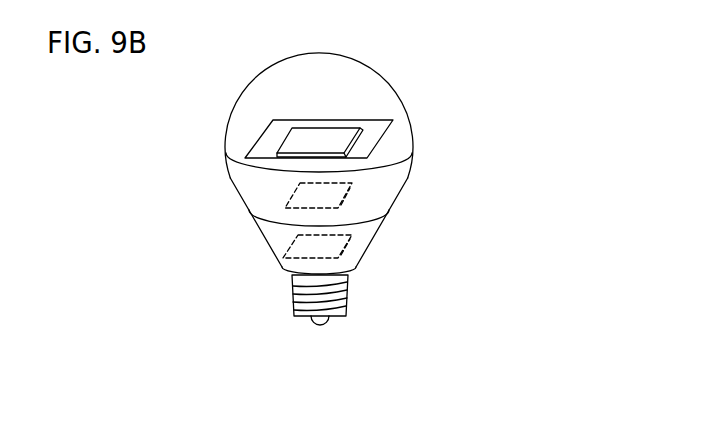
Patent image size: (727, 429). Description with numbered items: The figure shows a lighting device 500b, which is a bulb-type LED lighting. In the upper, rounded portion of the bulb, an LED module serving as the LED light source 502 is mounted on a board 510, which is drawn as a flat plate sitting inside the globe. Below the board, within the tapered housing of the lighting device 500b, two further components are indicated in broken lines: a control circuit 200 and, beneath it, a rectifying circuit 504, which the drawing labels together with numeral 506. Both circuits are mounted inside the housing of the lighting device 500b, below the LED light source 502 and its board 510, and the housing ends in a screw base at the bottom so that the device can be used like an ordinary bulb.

The lighting device 500b is at (350, 374).
The board 510 is at (372, 137).
The LED light source 502 is at (332, 137).
The control circuit 200 is at (333, 200).
The rectifying circuit 504 is at (398, 245).
The power supply 506 is at (327, 247).